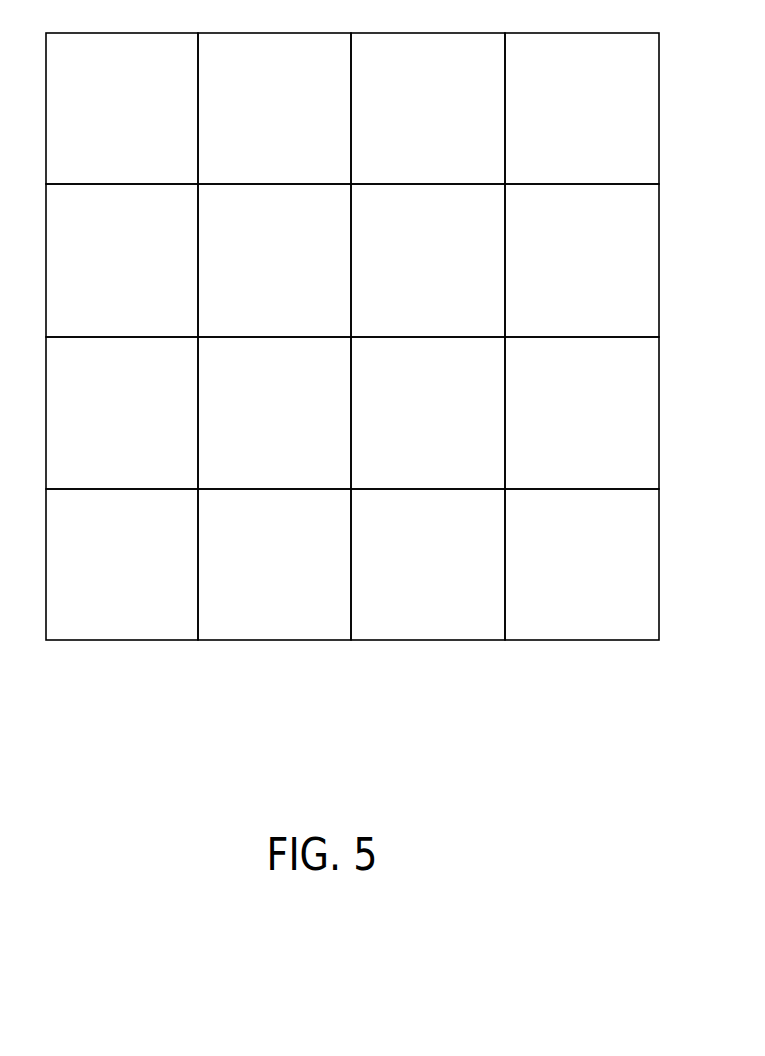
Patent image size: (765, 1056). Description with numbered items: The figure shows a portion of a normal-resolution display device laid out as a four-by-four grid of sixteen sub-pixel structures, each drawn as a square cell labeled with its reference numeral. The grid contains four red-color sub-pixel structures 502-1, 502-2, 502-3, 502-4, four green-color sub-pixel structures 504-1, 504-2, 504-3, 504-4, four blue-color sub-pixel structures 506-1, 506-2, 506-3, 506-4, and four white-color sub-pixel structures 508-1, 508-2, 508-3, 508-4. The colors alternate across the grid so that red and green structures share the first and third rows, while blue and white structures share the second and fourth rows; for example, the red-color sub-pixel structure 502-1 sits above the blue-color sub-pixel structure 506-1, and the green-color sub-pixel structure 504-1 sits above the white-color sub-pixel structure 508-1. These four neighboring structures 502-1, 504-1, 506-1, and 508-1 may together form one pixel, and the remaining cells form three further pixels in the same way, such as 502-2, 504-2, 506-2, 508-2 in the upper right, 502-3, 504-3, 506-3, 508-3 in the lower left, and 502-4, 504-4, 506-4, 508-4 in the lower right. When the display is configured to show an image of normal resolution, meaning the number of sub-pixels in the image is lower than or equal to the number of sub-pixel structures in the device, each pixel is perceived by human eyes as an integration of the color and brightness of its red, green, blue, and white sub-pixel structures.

The red-color sub-pixel structure 502-1 is at (93, 87).
The red-color sub-pixel structure 502-2 is at (400, 87).
The red-color sub-pixel structure 502-3 is at (93, 393).
The red-color sub-pixel structure 502-4 is at (400, 393).
The green-color sub-pixel structure 504-1 is at (246, 87).
The green-color sub-pixel structure 504-2 is at (554, 87).
The green-color sub-pixel structure 504-3 is at (246, 393).
The green-color sub-pixel structure 504-4 is at (554, 393).
The blue-color sub-pixel structure 506-1 is at (93, 239).
The blue-color sub-pixel structure 506-2 is at (400, 239).
The blue-color sub-pixel structure 506-3 is at (93, 547).
The blue-color sub-pixel structure 506-4 is at (400, 547).
The white-color sub-pixel structure 508-1 is at (246, 239).
The white-color sub-pixel structure 508-2 is at (554, 239).
The white-color sub-pixel structure 508-3 is at (246, 547).
The white-color sub-pixel structure 508-4 is at (554, 547).